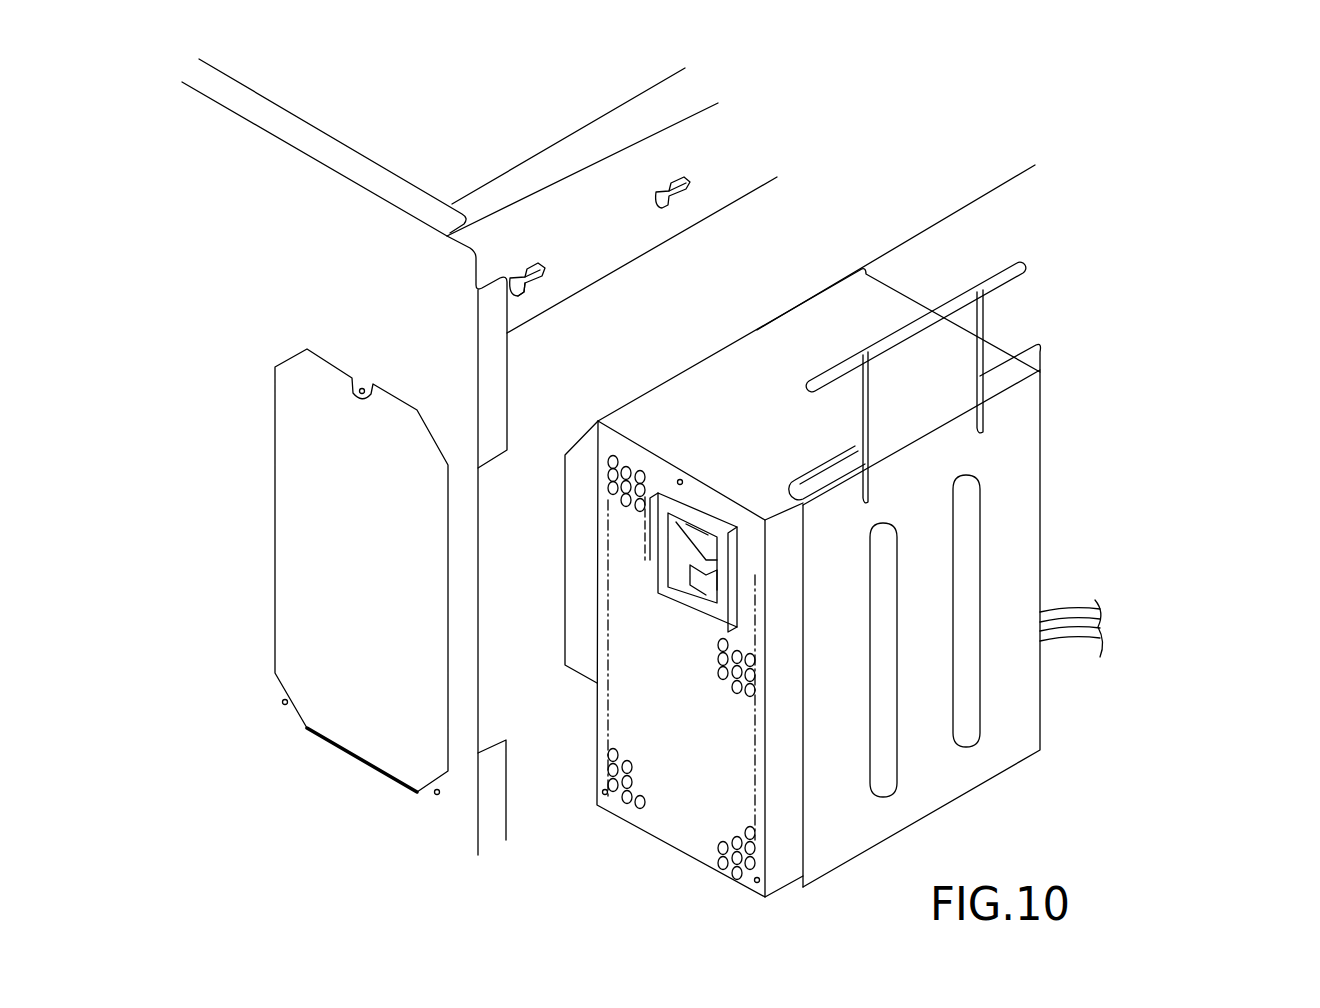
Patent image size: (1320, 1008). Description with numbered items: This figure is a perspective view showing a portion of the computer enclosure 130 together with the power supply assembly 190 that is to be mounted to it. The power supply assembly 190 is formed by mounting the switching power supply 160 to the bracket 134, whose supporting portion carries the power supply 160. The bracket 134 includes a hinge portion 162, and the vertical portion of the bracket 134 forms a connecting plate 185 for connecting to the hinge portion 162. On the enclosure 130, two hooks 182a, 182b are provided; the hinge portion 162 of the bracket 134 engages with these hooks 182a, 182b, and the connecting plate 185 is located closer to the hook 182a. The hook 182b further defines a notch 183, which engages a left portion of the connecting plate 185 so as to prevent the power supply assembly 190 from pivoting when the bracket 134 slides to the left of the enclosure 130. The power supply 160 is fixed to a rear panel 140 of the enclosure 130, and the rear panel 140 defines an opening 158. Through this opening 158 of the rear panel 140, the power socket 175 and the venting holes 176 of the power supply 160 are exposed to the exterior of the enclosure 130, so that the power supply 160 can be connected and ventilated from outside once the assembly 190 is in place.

The enclosure 130 is at (255, 270).
The hook 182a is at (667, 177).
The hook 182b is at (530, 260).
The notch 183 is at (540, 283).
The opening 158 is at (368, 742).
The rear panel 140 is at (313, 763).
The power supply assembly 190 is at (1218, 195).
The switching power supply 160 is at (782, 835).
The venting holes 176 is at (613, 785).
The power socket 175 is at (703, 580).
The bracket 134 is at (1013, 536).
The hinge portion 162 is at (993, 270).
The connecting plate 185 is at (927, 327).